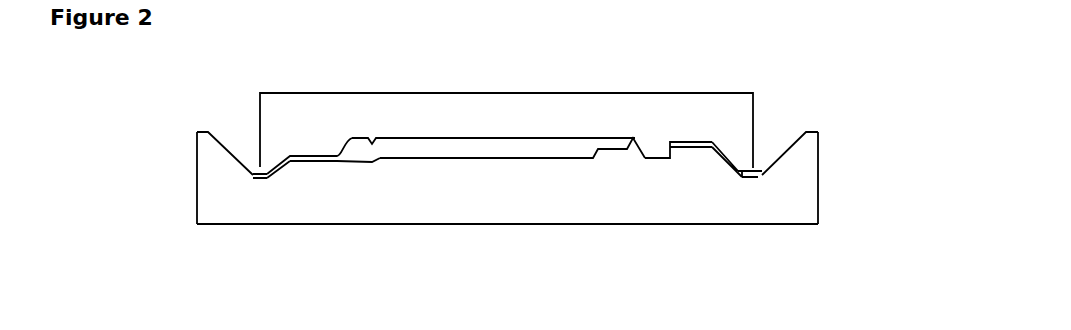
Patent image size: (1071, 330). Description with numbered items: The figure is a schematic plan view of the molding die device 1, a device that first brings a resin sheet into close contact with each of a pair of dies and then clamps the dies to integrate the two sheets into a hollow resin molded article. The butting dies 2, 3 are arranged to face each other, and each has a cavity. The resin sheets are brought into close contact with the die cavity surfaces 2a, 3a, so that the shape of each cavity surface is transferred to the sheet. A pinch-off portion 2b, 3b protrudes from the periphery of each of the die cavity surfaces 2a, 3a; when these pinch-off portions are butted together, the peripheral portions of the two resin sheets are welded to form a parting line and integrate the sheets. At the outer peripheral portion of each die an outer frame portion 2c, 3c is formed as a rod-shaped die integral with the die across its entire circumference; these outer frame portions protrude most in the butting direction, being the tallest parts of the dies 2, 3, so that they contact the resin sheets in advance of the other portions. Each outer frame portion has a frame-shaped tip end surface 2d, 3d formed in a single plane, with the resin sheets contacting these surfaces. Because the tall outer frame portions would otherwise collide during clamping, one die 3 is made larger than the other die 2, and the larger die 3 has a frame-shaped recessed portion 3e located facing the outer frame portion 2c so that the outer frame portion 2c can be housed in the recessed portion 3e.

The molding die device 1 is at (740, 72).
The die 2 is at (542, 91).
The die cavity surface 2a is at (443, 138).
The pinch-off portion 2b is at (340, 157).
The outer frame portion 2c is at (253, 170).
The tip end surface 2d is at (270, 176).
The die 3 is at (565, 229).
The die cavity surface 3a is at (462, 158).
The pinch-off portion 3b is at (340, 160).
The outer frame portion 3c is at (203, 150).
The tip end surface 3d is at (200, 132).
The recessed portion 3e is at (245, 167).